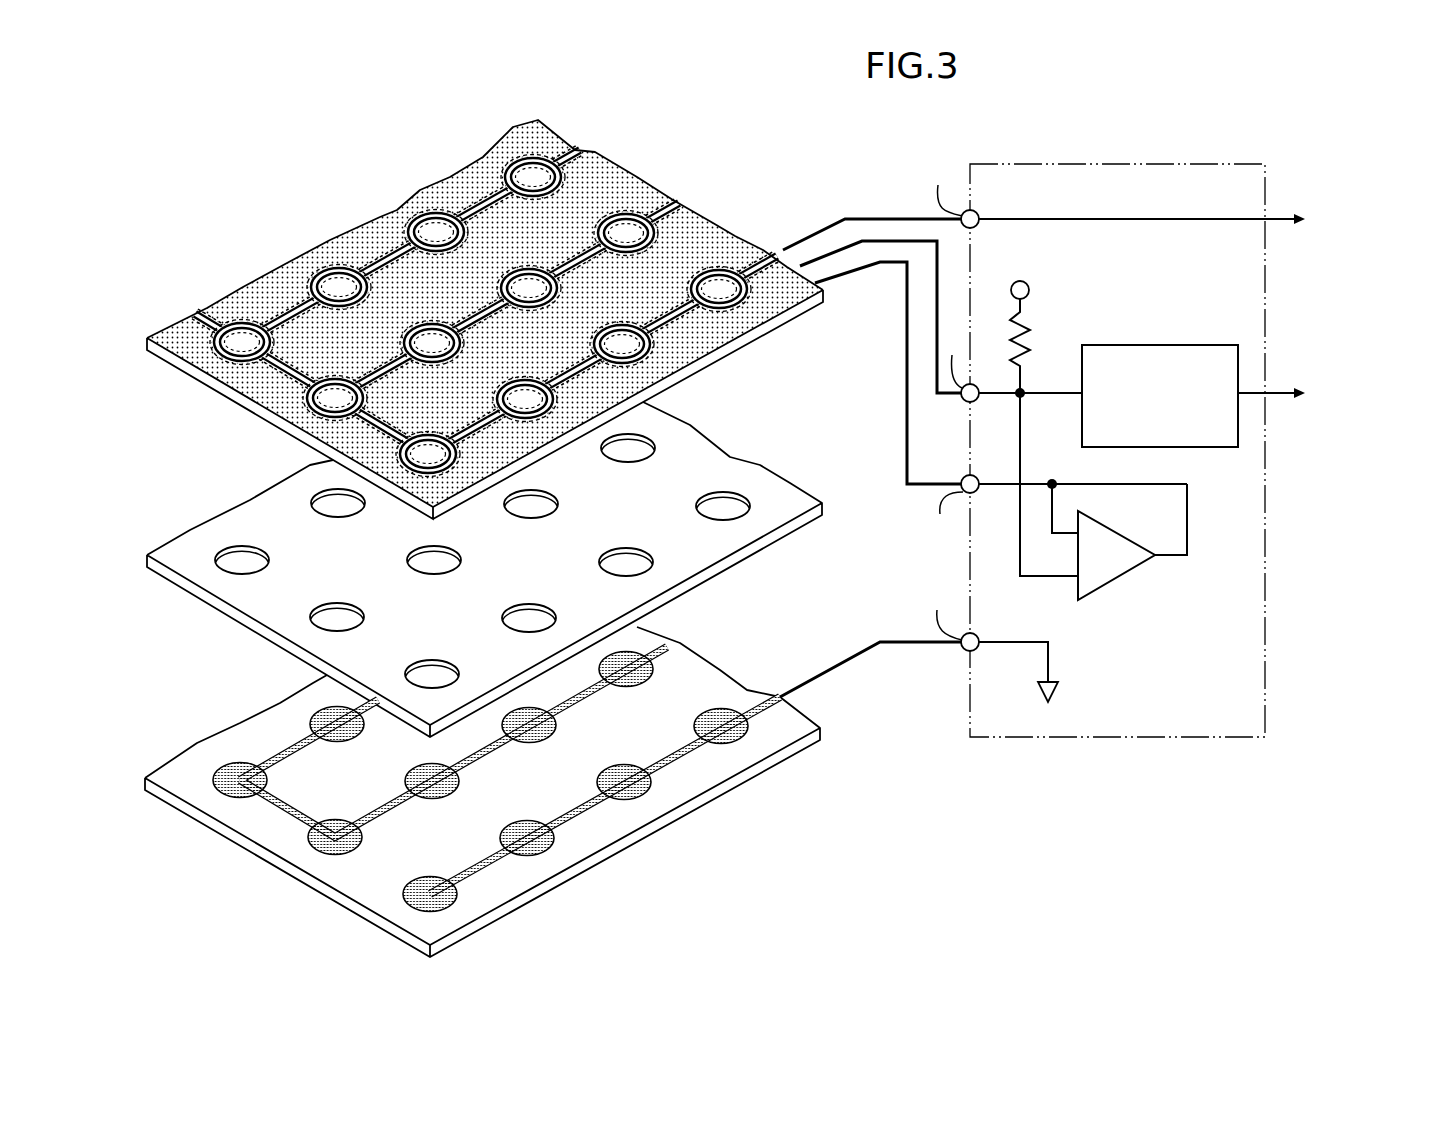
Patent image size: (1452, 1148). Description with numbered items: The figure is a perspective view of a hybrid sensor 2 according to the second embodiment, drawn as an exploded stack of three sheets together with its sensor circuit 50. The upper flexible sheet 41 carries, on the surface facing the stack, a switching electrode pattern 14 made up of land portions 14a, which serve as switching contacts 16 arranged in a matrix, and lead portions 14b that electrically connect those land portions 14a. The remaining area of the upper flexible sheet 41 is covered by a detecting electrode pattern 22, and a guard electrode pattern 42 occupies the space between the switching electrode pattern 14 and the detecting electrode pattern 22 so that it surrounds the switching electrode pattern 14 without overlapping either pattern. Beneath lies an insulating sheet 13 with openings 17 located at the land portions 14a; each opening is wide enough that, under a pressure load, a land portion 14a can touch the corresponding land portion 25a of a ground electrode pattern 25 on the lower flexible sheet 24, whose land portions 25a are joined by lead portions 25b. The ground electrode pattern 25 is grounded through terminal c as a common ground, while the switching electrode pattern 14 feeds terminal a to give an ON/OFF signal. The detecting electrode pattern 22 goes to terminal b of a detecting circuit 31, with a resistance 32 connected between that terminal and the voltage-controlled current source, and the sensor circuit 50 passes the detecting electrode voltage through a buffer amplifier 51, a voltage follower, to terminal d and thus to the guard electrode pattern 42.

The hybrid sensor 2 is at (766, 145).
The insulating sheet 13 is at (498, 569).
The switching electrode pattern 14 is at (490, 300).
The land portions 14a is at (480, 309).
The lead portions 14b is at (483, 205).
The switching contacts 16 is at (410, 454).
The openings 17 is at (420, 668).
The detecting electrode pattern 22 is at (710, 247).
The lower flexible sheet 24 is at (499, 794).
The ground electrode pattern 25 is at (496, 804).
The land portions 25a is at (397, 890).
The lead portions 25b is at (490, 863).
The detecting circuit 31 is at (1163, 345).
The resistance 32 is at (1027, 337).
The upper flexible sheet 41 is at (740, 337).
The guard electrode pattern 42 is at (657, 197).
The sensor circuit 50 is at (1100, 164).
The buffer amplifier 51 is at (1118, 580).